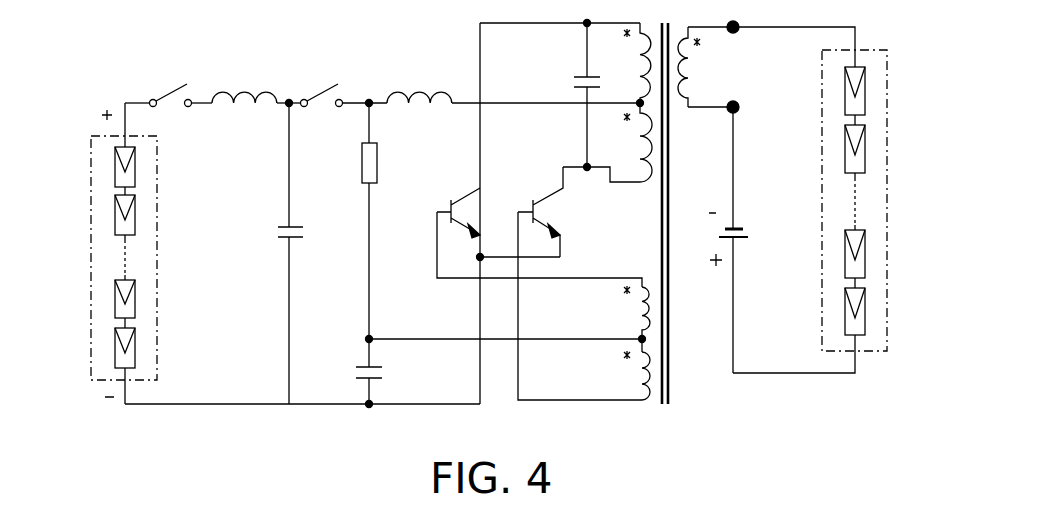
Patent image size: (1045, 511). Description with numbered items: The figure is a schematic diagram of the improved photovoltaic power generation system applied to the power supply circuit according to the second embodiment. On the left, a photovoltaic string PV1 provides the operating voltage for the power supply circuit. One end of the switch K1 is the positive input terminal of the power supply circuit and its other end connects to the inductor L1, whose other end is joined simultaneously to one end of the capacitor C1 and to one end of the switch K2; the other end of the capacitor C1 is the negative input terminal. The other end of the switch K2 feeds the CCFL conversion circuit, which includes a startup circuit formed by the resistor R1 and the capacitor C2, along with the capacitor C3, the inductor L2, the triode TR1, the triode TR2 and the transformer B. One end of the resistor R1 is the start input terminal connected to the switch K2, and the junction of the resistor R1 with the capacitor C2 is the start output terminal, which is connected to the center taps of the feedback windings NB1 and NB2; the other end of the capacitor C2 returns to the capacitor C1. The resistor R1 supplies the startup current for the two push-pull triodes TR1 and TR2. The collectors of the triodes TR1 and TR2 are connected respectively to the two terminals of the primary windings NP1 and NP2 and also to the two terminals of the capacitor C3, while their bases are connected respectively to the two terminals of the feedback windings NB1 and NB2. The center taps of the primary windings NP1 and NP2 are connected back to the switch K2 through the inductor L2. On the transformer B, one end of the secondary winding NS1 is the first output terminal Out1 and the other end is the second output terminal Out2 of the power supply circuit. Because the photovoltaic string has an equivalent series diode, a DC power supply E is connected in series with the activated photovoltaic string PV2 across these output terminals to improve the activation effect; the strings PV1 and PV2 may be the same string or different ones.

The photovoltaic string PV1 is at (95, 253).
The switch K1 is at (172, 82).
The inductor L1 is at (244, 81).
The switch K2 is at (324, 82).
The inductor L2 is at (419, 82).
The capacitor C1 is at (274, 253).
The resistor R1 is at (386, 221).
The capacitor C2 is at (386, 371).
The capacitor C3 is at (571, 95).
The triode TR1 is at (560, 212).
The triode TR2 is at (428, 213).
The primary winding NP2 is at (625, 63).
The primary winding NP1 is at (626, 142).
The feedback winding NB2 is at (622, 319).
The feedback winding NB1 is at (622, 375).
The transformer B is at (679, 213).
The secondary winding NS1 is at (704, 67).
The first output terminal Out1 is at (763, 43).
The second output terminal Out2 is at (763, 124).
The DC power supply E is at (741, 240).
The photovoltaic string PV2 is at (882, 200).